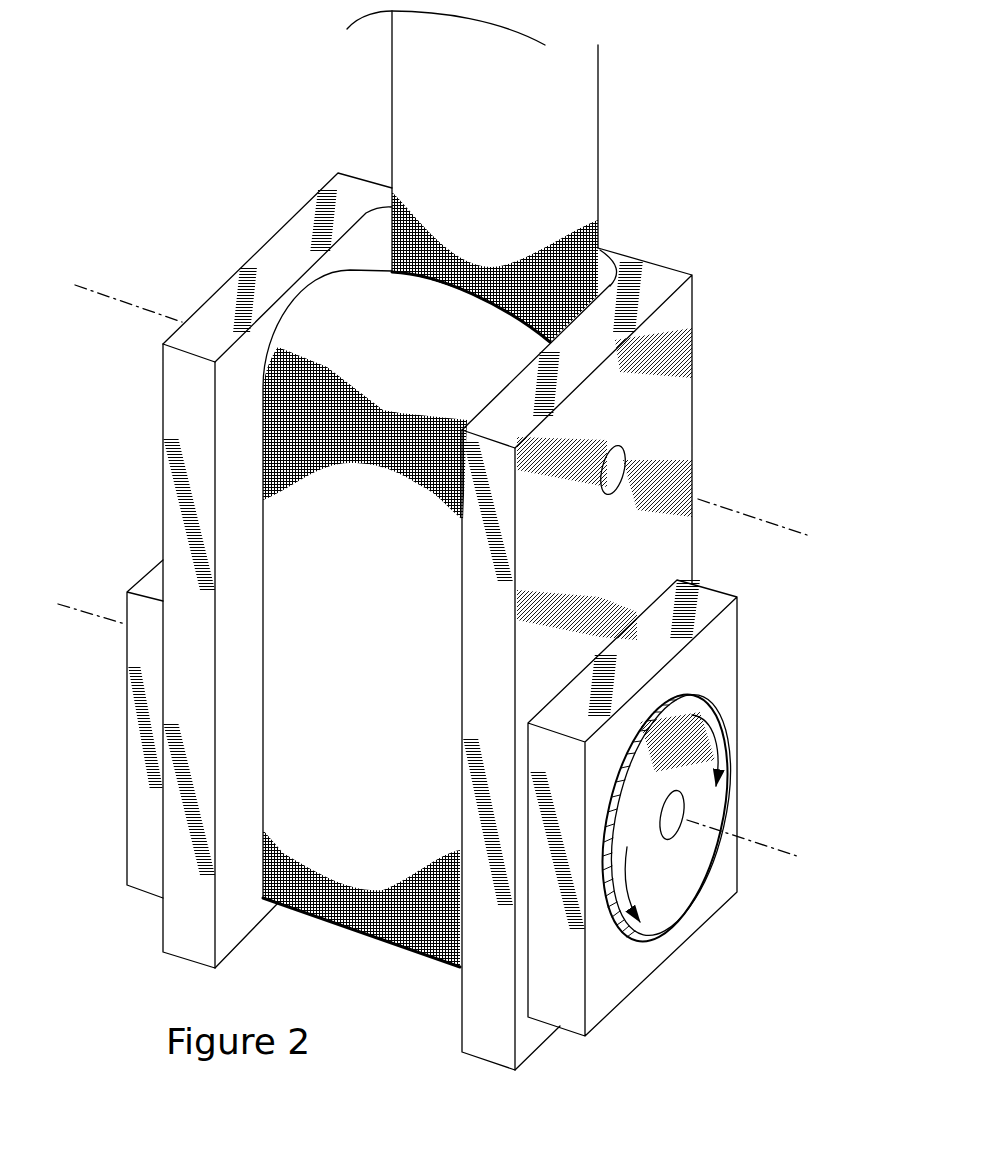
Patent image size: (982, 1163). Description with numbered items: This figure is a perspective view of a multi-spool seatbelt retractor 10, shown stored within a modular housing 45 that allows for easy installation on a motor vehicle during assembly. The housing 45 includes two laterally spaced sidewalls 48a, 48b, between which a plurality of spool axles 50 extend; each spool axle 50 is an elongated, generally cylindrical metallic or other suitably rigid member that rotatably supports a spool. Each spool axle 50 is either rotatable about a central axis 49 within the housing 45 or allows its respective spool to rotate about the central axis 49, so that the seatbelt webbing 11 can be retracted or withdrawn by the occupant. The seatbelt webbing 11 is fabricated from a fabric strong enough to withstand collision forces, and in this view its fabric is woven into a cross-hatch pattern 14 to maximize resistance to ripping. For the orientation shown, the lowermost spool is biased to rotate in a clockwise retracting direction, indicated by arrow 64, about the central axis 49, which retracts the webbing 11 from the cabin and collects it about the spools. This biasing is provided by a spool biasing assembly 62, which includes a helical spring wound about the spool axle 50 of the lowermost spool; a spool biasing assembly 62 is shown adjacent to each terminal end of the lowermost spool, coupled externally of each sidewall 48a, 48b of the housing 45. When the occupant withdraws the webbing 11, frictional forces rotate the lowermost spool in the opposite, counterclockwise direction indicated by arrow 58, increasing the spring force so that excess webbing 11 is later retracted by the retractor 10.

The seatbelt retractor 10 is at (138, 100).
The seatbelt webbing 11 is at (574, 163).
The cross-hatch pattern 14 is at (599, 249).
The modular housing 45 is at (712, 410).
The sidewall 48a is at (655, 408).
The sidewall 48b is at (203, 300).
The central axis 49 is at (430, 576).
The spool axle 50 is at (622, 469).
The arrow 58 is at (627, 903).
The spool biasing assembly 62 is at (134, 572).
The retracting direction arrow 64 is at (692, 717).